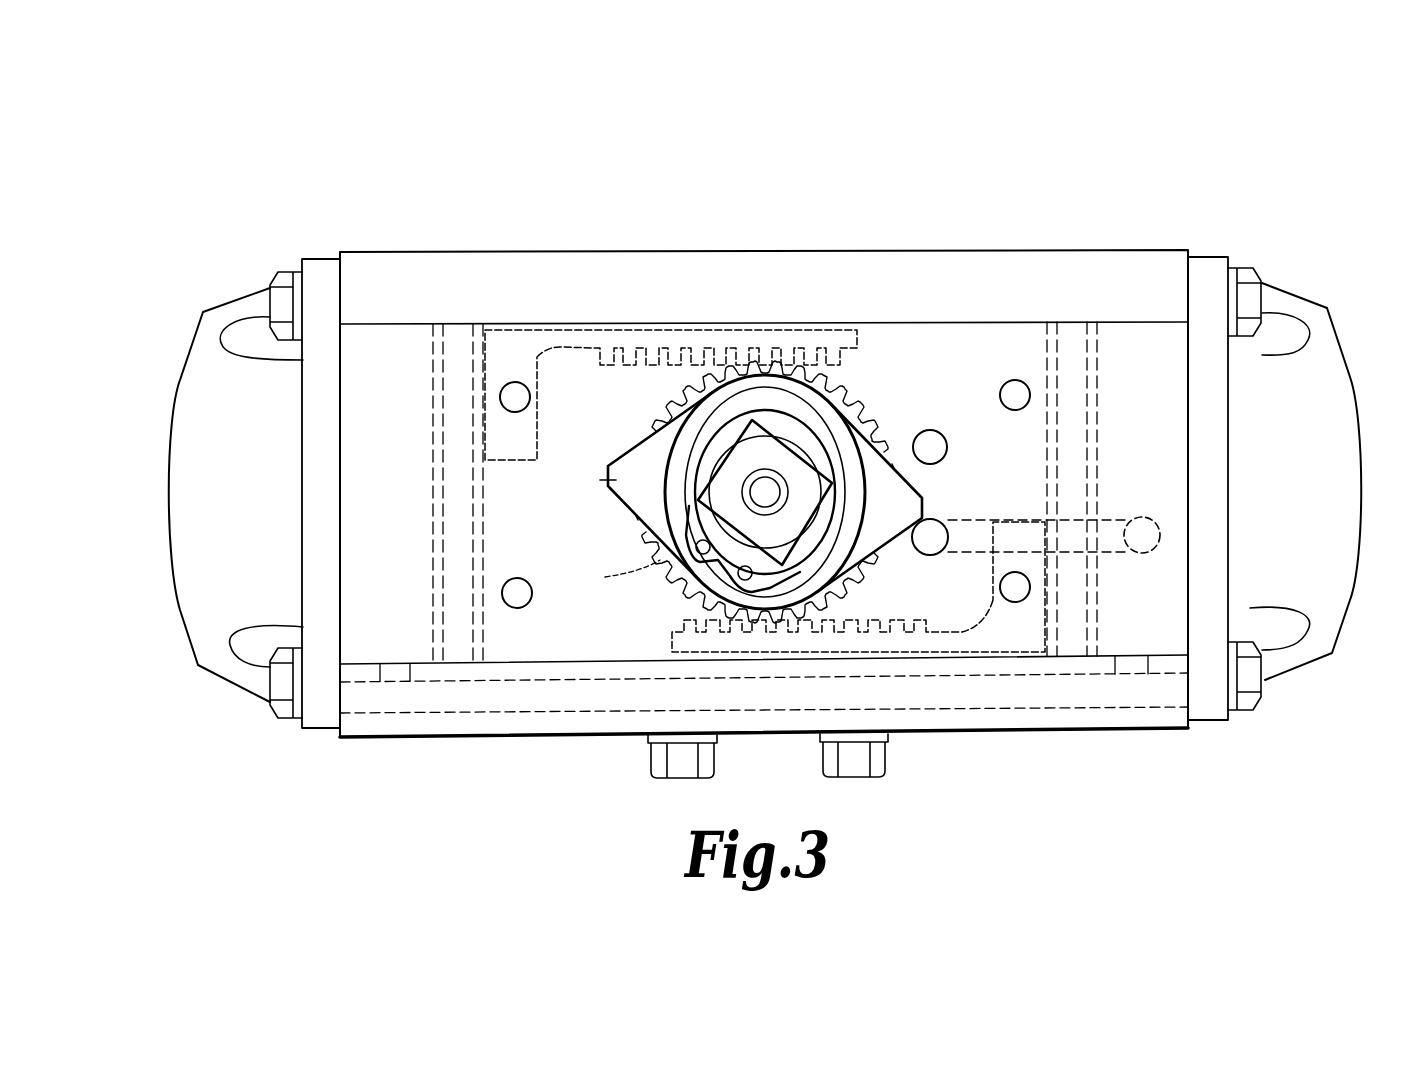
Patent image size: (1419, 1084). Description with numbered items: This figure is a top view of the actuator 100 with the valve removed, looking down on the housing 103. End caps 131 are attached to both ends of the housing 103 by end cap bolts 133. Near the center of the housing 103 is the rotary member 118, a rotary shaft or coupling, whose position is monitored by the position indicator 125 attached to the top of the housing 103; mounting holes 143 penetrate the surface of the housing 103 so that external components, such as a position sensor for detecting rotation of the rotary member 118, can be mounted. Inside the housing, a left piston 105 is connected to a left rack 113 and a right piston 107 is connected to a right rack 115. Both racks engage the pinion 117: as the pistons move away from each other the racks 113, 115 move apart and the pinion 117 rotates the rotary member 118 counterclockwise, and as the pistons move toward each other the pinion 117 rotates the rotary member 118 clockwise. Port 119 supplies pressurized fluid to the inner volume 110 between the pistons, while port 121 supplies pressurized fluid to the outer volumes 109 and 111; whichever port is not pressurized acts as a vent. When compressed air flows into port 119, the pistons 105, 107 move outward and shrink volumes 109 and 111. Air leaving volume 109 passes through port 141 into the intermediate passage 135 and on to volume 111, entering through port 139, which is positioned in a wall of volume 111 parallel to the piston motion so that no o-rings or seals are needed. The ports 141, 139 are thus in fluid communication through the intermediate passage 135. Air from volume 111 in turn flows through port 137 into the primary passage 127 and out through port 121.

The actuator 100 is at (854, 202).
The housing 103 is at (780, 252).
The left piston 105 is at (450, 360).
The right piston 107 is at (1048, 350).
The volume 109 is at (390, 415).
The inner volume 110 is at (600, 392).
The volume 111 is at (1147, 368).
The left rack 113 is at (668, 352).
The right rack 115 is at (908, 630).
The pinion 117 is at (605, 577).
The rotary member 118 is at (775, 492).
The port 119 is at (932, 447).
The port 121 is at (932, 555).
The position indicator 125 is at (606, 480).
The primary passage 127 is at (978, 520).
The end cap 131 is at (1340, 378).
The end cap bolt 133 is at (284, 278).
The intermediate passage 135 is at (600, 665).
The port 137 is at (1142, 518).
The port 139 is at (1130, 655).
The port 141 is at (396, 663).
The mounting hole 143 is at (522, 590).